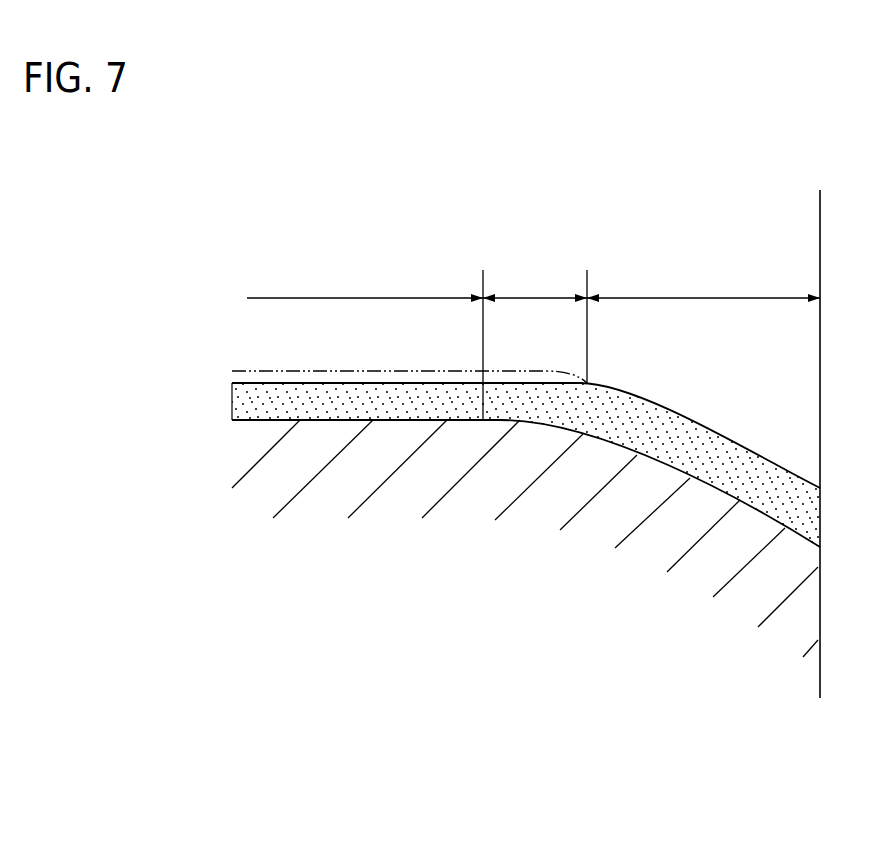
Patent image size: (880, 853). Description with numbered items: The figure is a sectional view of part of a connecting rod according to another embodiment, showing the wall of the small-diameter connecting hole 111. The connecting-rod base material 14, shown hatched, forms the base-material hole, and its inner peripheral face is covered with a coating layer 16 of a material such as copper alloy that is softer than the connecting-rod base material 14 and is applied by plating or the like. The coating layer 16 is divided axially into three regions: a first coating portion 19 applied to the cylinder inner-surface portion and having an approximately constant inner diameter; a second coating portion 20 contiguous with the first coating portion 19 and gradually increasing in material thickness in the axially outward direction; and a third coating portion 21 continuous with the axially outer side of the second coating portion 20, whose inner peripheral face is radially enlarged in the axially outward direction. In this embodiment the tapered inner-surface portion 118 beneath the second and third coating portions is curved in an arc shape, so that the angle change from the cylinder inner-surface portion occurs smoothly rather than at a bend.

The connecting-rod base material 14 is at (382, 468).
The coating layer 16 is at (262, 397).
The tapered inner-surface portion 118 is at (622, 443).
The connecting hole 111 is at (383, 324).
The first coating portion 19 is at (300, 298).
The second coating portion 20 is at (533, 298).
The third coating portion 21 is at (713, 298).